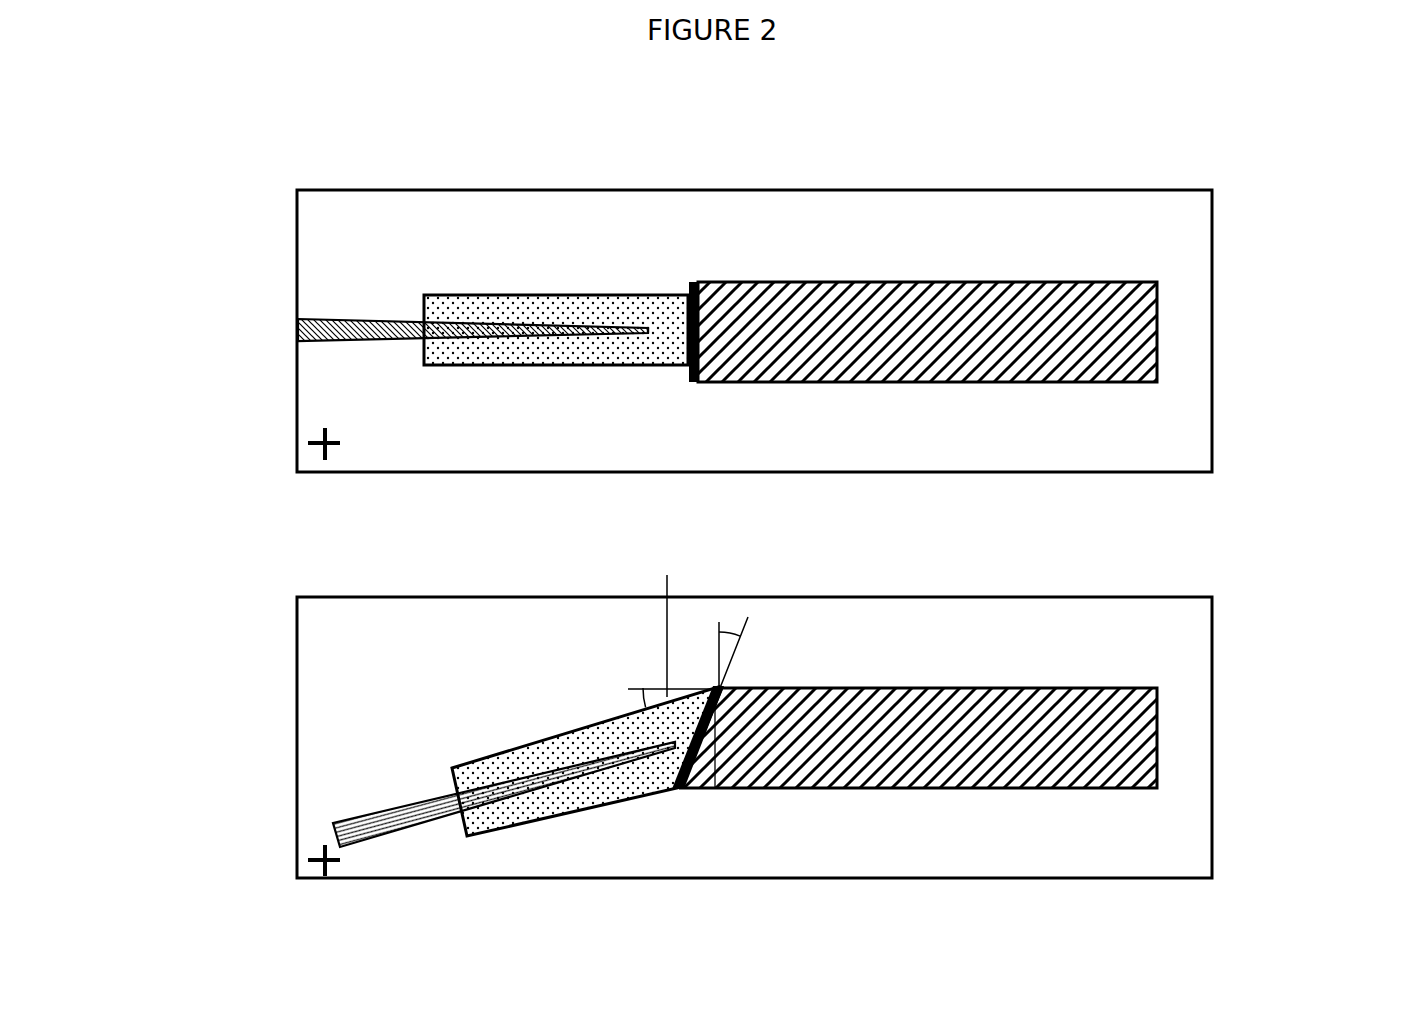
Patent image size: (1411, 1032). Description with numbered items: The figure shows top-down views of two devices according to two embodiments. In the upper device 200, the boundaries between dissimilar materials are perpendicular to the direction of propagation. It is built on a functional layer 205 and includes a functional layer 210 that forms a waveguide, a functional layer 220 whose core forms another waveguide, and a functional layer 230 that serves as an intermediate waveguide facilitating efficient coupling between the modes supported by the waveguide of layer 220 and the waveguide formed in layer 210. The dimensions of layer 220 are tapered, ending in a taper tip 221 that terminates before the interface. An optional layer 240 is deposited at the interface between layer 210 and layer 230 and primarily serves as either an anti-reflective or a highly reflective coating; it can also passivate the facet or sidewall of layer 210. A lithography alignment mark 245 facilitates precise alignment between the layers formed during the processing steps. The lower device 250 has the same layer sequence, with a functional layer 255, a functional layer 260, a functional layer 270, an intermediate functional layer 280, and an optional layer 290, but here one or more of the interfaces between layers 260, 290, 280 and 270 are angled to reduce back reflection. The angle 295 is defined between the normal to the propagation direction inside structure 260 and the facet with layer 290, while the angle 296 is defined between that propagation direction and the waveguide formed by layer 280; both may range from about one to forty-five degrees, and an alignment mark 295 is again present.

The device 200 is at (701, 327).
The functional layer 205 is at (1213, 283).
The functional layer 210 is at (1157, 330).
The functional layer 220 is at (380, 320).
The taper tip 221 is at (640, 328).
The functional layer 230 is at (563, 296).
The optional layer 240 is at (689, 283).
The lithography alignment mark 245 is at (308, 443).
The device 250 is at (701, 739).
The functional layer 255 is at (1213, 688).
The functional layer 260 is at (1157, 736).
The functional layer 270 is at (397, 797).
The functional layer 280 is at (582, 730).
The optional layer 290 is at (676, 788).
The angle 295 is at (719, 688).
The angle 296 is at (674, 628).